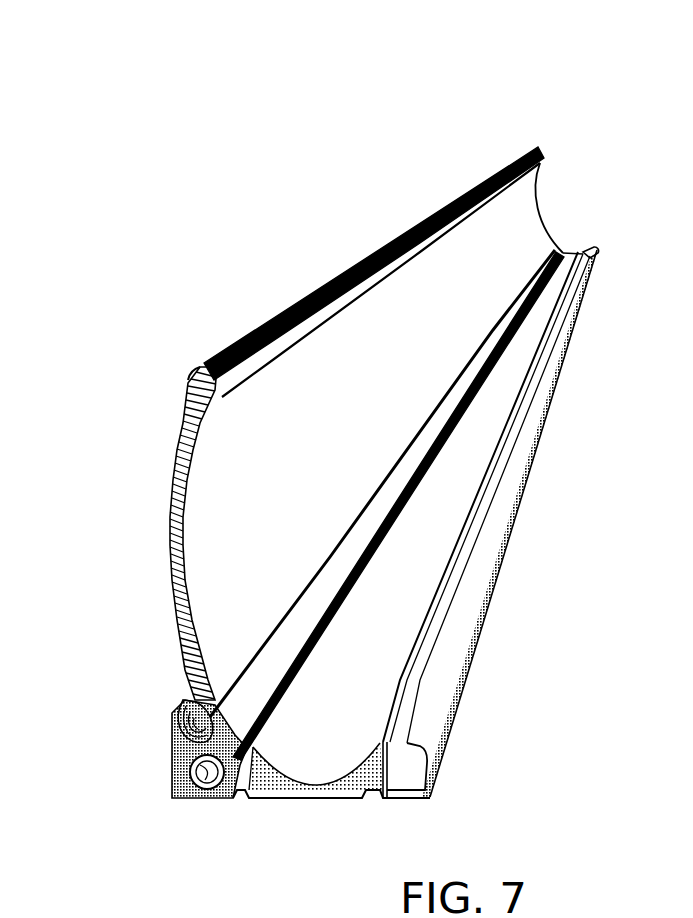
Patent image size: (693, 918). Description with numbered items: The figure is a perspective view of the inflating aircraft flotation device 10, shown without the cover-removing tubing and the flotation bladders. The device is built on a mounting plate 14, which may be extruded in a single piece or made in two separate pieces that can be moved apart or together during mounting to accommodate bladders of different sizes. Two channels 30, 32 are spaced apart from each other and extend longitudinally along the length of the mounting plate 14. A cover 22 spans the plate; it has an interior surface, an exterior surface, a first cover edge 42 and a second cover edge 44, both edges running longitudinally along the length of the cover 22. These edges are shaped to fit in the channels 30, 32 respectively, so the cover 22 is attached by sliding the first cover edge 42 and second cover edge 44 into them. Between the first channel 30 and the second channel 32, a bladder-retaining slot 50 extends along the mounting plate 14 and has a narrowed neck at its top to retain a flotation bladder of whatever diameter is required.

The flotation device 10 is at (305, 140).
The mounting plate 14 is at (263, 800).
The cover 22 is at (197, 455).
The first channel 30 is at (175, 738).
The second channel 32 is at (405, 777).
The first cover edge 42 is at (177, 718).
The second cover edge 44 is at (208, 363).
The bladder-retaining slot 50 is at (212, 802).